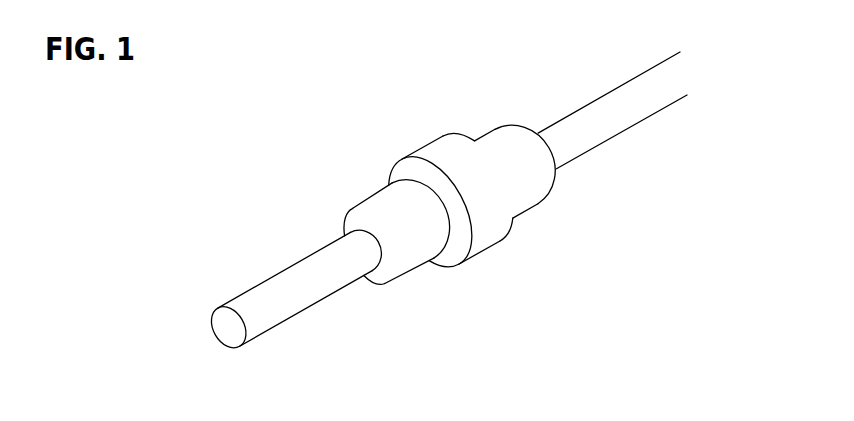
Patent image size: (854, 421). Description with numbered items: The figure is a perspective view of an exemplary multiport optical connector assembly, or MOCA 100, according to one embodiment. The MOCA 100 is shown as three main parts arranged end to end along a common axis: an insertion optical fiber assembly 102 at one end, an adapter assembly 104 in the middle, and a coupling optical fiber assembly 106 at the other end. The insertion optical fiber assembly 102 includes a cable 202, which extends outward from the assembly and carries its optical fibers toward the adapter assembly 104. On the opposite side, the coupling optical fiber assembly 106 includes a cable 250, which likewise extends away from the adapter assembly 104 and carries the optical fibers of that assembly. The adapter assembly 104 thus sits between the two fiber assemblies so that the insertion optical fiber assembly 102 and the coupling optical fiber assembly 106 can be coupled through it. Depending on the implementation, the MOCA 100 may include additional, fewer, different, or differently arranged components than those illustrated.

The multiport optical connector assembly (MOCA) 100 is at (351, 100).
The insertion optical fiber assembly 102 is at (363, 293).
The adapter assembly 104 is at (483, 215).
The coupling optical fiber assembly 106 is at (595, 190).
The cable 202 is at (235, 312).
The cable 250 is at (632, 106).